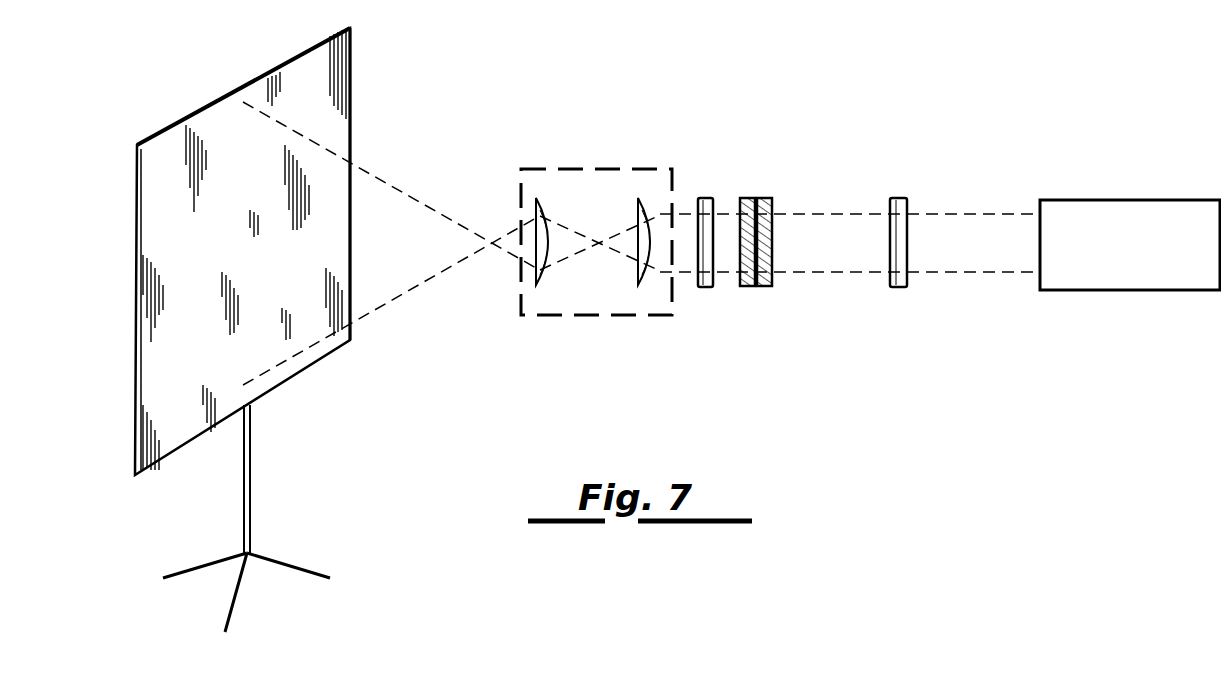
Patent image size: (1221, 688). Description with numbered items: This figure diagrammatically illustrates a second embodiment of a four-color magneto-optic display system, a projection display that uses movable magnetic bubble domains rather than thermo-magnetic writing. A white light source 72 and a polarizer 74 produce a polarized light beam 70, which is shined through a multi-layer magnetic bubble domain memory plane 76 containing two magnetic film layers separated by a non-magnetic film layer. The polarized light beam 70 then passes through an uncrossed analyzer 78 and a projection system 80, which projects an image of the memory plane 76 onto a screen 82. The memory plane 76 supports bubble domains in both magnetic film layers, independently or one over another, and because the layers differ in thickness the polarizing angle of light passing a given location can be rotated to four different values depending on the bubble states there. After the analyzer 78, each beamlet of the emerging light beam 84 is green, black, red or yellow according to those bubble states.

The polarized light beam 70 is at (803, 215).
The white light source 72 is at (1130, 199).
The polarizer 74 is at (899, 197).
The multi-layer magnetic bubble domain memory plane 76 is at (748, 287).
The uncrossed analyzer 78 is at (705, 197).
The projection system 80 is at (547, 168).
The screen 82 is at (178, 122).
The light beam 84 is at (680, 272).